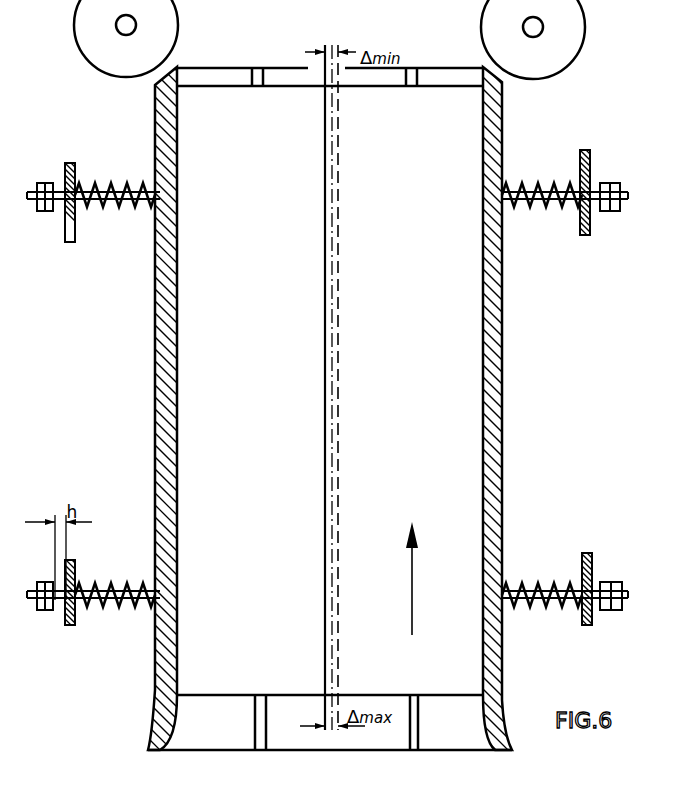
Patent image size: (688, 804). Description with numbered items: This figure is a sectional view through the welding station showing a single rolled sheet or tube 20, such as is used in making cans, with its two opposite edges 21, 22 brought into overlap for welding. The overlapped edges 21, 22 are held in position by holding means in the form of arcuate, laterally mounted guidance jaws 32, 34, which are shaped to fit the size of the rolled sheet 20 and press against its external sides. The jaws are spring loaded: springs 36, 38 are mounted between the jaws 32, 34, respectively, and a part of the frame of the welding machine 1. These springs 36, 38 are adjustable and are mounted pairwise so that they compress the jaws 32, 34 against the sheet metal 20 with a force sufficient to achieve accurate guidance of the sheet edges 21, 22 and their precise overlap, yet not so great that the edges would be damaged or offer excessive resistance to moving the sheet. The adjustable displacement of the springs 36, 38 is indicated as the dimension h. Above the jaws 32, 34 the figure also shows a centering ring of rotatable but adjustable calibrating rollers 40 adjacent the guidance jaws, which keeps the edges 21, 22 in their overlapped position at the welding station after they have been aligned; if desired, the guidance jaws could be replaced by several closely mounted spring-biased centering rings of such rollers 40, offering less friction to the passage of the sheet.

The welding machine 1 is at (70, 180).
The rolled sheet 20 is at (344, 410).
The sheet edge 21 is at (322, 495).
The sheet edge 22 is at (341, 452).
The guidance jaw 32 is at (167, 253).
The guidance jaw 34 is at (493, 264).
The spring 36 is at (100, 203).
The spring 38 is at (532, 204).
The calibrating roller 40 is at (108, 55).